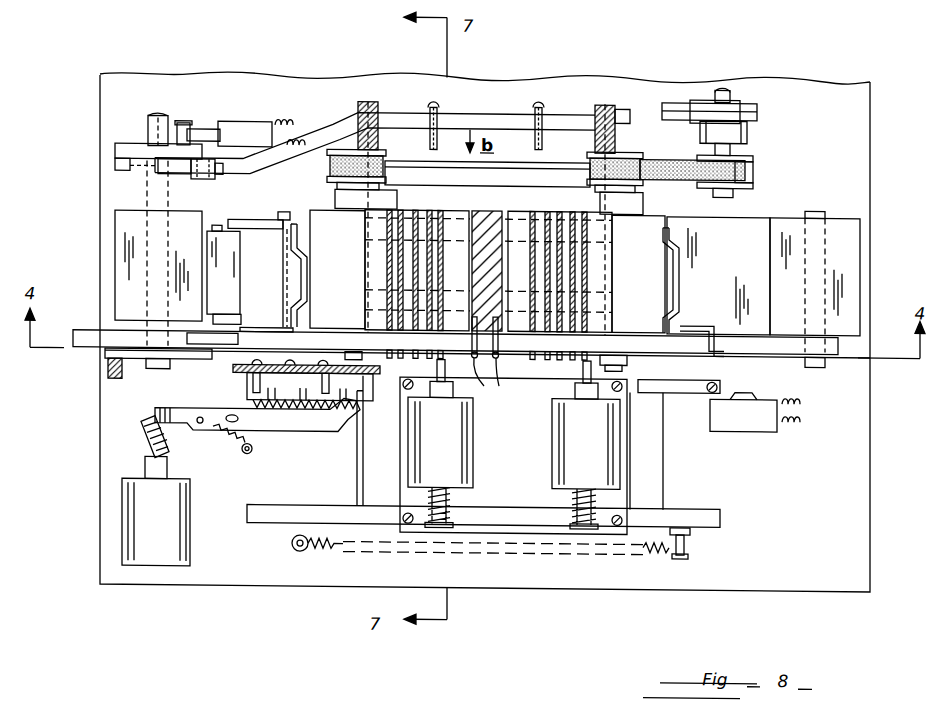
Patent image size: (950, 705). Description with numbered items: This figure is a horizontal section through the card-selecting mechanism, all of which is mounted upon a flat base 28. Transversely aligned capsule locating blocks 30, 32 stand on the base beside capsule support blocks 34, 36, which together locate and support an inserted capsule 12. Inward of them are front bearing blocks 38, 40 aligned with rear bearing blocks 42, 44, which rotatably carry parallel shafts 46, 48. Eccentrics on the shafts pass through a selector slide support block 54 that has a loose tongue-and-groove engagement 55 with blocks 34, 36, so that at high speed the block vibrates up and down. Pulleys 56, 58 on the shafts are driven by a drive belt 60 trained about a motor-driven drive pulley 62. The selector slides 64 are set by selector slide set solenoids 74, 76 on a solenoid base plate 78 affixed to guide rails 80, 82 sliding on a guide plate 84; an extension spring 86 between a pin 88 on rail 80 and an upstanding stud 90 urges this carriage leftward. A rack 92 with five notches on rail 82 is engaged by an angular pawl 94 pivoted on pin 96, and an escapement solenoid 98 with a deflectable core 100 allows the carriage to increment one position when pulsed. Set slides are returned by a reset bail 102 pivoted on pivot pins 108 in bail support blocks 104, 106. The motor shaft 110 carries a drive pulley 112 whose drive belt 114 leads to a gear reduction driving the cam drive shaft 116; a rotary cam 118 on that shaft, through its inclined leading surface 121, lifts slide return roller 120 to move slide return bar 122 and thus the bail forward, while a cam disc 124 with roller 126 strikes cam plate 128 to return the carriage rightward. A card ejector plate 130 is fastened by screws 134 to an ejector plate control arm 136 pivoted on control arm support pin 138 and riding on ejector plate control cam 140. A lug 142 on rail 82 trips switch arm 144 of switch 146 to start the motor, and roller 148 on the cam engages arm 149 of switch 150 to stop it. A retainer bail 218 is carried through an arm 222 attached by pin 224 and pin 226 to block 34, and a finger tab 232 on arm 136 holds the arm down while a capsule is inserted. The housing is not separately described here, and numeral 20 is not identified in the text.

The capsule 12 is at (280, 701).
The housing 20 is at (535, 686).
The base 28 is at (755, 583).
The capsule locating block 30 is at (120, 266).
The capsule locating block 32 is at (860, 258).
The capsule support block 34 is at (240, 216).
The capsule support block 36 is at (710, 273).
The front bearing block 38 is at (317, 336).
The front bearing block 40 is at (633, 356).
The rear bearing block 42 is at (388, 195).
The rear bearing block 44 is at (645, 199).
The shaft 46 is at (362, 382).
The shaft 48 is at (632, 359).
The selector slide support block 54 is at (290, 269).
The tongue-and-groove engagement 55 is at (298, 256).
The pulley 56 is at (330, 151).
The pulley 58 is at (630, 144).
The drive belt 60 is at (668, 154).
The drive pulley 62 is at (752, 175).
The selector slides 64 is at (432, 206).
The selector slide set solenoid 74 is at (473, 428).
The selector slide set solenoid 76 is at (555, 458).
The solenoid base plate 78 is at (500, 507).
The guide rail 80 is at (712, 506).
The guide rail 82 is at (713, 343).
The guide plate 84 is at (664, 472).
The extension spring 86 is at (660, 549).
The pin 88 is at (690, 538).
The stud 90 is at (292, 543).
The rack 92 is at (350, 408).
The pawl 94 is at (268, 420).
The pin 96 is at (228, 414).
The escapement solenoid 98 is at (166, 530).
The core 100 is at (143, 433).
The reset bail 102 is at (508, 114).
The bail support block 104 is at (362, 97).
The bail support block 106 is at (620, 103).
The pivot pins 108 is at (428, 115).
The motor shaft 110 is at (725, 85).
The drive pulley 112 is at (748, 123).
The drive belt 114 is at (757, 101).
The cam drive shaft 116 is at (152, 118).
The rotary cam 118 is at (116, 160).
The slide return roller 120 is at (200, 180).
The inclined leading surface 121 is at (160, 168).
The slide return bar 122 is at (318, 127).
The cam disc 124 is at (150, 360).
The roller 126 is at (112, 378).
The cam plate 128 is at (306, 373).
The card ejector plate 130 is at (478, 208).
The screws 134 is at (494, 364).
The ejector plate control arm 136 is at (820, 362).
The control arm support pin 138 is at (828, 356).
The ejector plate control cam 140 is at (223, 274).
The lug 142 is at (720, 380).
The switch arm 144 is at (680, 389).
The switch 146 is at (768, 425).
The roller 148 is at (182, 120).
The arm 149 is at (228, 130).
The switch 150 is at (250, 118).
The retainer bail 218 is at (243, 256).
The arm 222 is at (268, 324).
The pin 224 is at (232, 352).
The pin 226 is at (284, 208).
The finger tab 232 is at (85, 348).